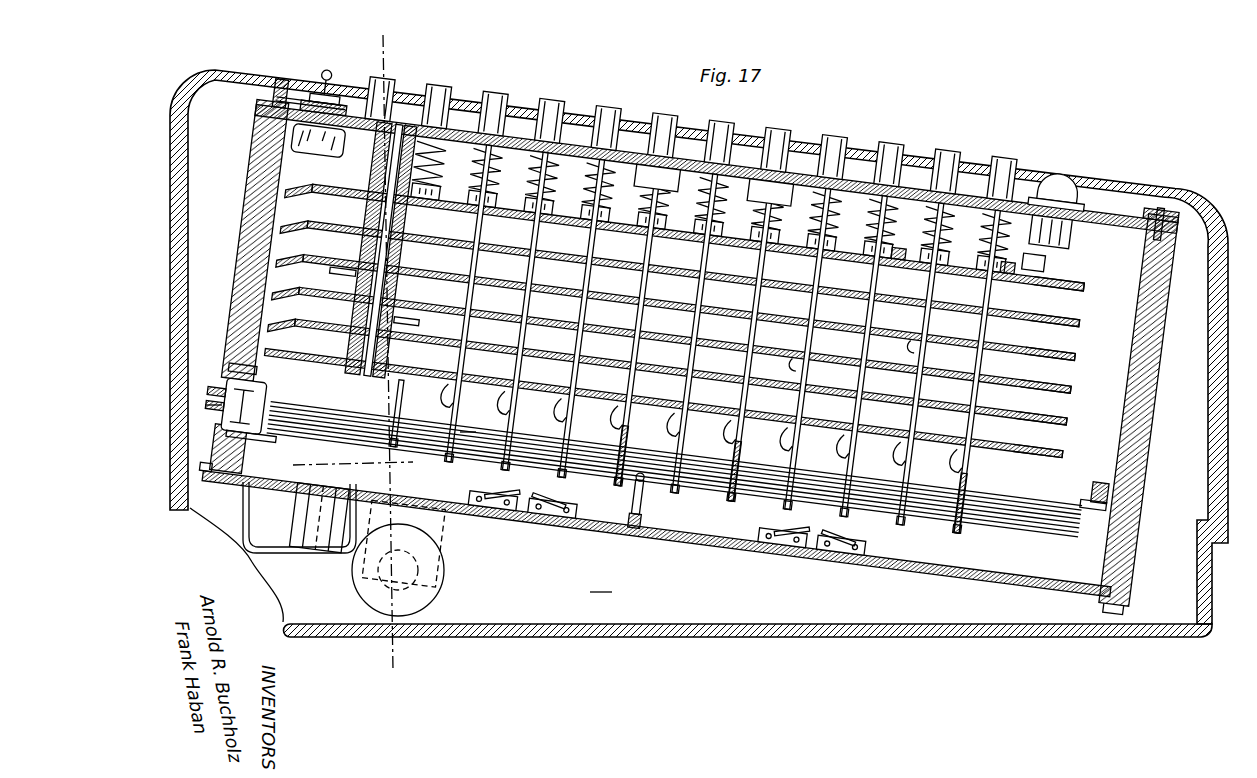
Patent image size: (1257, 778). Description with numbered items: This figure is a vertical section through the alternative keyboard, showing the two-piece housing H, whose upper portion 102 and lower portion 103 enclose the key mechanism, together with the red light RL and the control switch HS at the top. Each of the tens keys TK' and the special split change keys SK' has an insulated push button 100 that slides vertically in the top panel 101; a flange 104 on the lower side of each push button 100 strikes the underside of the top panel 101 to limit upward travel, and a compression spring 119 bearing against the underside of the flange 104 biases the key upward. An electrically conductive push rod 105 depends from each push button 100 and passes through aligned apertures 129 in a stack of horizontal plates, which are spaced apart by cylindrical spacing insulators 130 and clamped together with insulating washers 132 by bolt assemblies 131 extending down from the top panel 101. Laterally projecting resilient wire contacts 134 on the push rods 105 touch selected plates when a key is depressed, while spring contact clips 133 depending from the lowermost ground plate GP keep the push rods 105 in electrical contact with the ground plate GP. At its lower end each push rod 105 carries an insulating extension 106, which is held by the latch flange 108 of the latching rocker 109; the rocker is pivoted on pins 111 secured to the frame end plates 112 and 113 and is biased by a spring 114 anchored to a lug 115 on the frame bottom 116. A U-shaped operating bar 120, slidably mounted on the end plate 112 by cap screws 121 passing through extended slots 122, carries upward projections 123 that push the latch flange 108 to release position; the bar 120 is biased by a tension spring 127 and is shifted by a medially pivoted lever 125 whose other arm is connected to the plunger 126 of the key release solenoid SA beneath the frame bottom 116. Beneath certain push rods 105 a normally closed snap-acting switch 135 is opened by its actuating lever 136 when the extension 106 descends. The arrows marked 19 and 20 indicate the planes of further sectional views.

The push button 100 is at (826, 143).
The top panel 101 is at (1142, 212).
The upper portion 102 is at (170, 207).
The lower portion 103 is at (925, 640).
The flange 104 is at (455, 125).
The push rod 105 is at (330, 352).
The extension 106 is at (390, 455).
The latch flange 108 is at (1018, 538).
The latching rocker 109 is at (1073, 485).
The pins 111 is at (262, 382).
The frame end plate 112 is at (238, 330).
The frame end plate 113 is at (1150, 412).
The spring 114 is at (640, 497).
The lug 115 is at (650, 517).
The frame bottom 116 is at (742, 556).
The compression spring 119 is at (583, 135).
The operating bar 120 is at (318, 445).
The cap screws 121 is at (230, 418).
The extended slots 122 is at (235, 432).
The projections 123 is at (290, 398).
The lever 125 is at (245, 522).
The plunger 126 is at (438, 555).
The tension spring 127 is at (276, 490).
The aligned apertures 129 is at (640, 256).
The cylindrical spacing insulators 130 is at (345, 276).
The bolt assemblies 131 is at (399, 110).
The insulating washers 132 is at (362, 375).
The spring contact clips 133 is at (500, 405).
The wire contacts 134 is at (352, 197).
The snap-acting switch 135 is at (500, 500).
The actuating lever 136 is at (528, 468).
The section line 19 is at (396, 45).
The section line 20 is at (212, 398).
The control switch HS is at (342, 55).
The special split change keys SK' is at (416, 72).
The tens keys TK' is at (578, 104).
The red light RL is at (1068, 176).
The key release solenoid SA is at (355, 590).
The ground plate GP is at (1060, 460).
The housing H is at (601, 581).